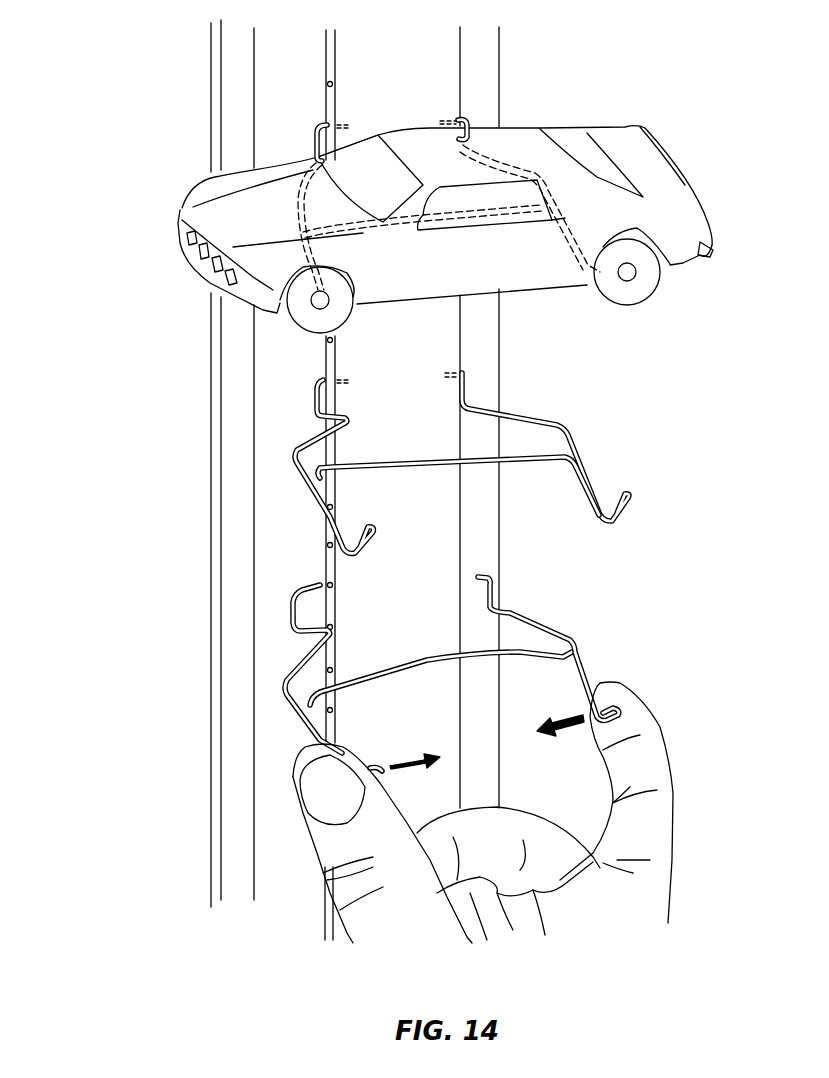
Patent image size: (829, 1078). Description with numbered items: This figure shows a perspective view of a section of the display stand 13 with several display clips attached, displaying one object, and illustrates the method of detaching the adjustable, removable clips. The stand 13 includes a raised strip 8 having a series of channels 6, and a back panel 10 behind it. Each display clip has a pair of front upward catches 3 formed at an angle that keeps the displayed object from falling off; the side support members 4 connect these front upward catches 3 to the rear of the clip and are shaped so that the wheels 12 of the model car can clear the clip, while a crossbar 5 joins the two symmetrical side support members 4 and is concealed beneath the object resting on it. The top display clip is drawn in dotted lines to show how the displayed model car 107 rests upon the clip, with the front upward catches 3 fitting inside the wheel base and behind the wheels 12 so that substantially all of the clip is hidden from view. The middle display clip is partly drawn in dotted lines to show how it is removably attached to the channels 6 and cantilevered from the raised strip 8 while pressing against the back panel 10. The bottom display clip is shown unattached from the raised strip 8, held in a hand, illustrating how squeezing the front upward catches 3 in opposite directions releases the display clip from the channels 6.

The front upward catches 3 is at (632, 497).
The side support members 4 is at (577, 435).
The crossbar 5 is at (527, 463).
The channels 6 is at (325, 85).
The raised strip 8 is at (430, 82).
The back panel 10 is at (470, 100).
The wheels 12 is at (640, 287).
The stand 13 is at (150, 765).
The toy vehicle 107 is at (590, 207).